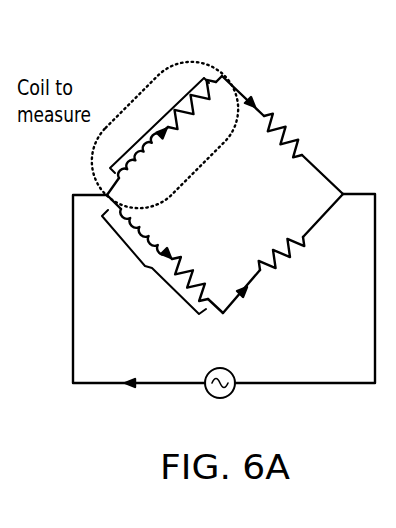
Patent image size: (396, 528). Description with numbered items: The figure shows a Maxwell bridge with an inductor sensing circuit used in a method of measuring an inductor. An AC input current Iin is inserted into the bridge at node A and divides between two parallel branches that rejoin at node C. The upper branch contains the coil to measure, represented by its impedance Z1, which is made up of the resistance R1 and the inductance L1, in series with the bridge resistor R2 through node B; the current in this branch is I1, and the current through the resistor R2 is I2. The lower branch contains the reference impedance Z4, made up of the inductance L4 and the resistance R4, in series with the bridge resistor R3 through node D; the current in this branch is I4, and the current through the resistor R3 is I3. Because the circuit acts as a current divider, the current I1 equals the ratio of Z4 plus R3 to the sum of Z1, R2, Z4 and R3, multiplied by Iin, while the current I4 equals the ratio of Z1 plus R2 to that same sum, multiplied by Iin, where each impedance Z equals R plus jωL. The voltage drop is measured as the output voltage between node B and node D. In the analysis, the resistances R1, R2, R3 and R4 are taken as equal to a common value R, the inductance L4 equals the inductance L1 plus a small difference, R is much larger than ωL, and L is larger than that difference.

The impedance of the coil to measure Z1 is at (166, 141).
The resistance R1 is at (197, 113).
The inductance L1 is at (139, 169).
The current I1 is at (174, 148).
The resistor R2 is at (293, 136).
The current I2 is at (258, 95).
The resistor R3 is at (273, 251).
The current I3 is at (252, 304).
The impedance Z4 is at (163, 254).
The inductance L4 is at (143, 232).
The resistance R4 is at (198, 279).
The current I4 is at (176, 248).
The input AC current Iin is at (175, 403).
The node A is at (61, 194).
The node B is at (225, 61).
The node C is at (387, 196).
The node D is at (220, 330).